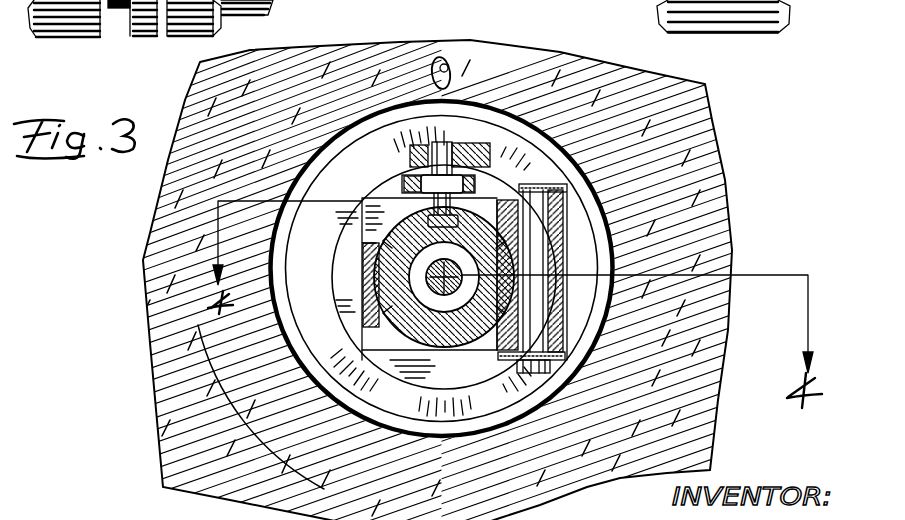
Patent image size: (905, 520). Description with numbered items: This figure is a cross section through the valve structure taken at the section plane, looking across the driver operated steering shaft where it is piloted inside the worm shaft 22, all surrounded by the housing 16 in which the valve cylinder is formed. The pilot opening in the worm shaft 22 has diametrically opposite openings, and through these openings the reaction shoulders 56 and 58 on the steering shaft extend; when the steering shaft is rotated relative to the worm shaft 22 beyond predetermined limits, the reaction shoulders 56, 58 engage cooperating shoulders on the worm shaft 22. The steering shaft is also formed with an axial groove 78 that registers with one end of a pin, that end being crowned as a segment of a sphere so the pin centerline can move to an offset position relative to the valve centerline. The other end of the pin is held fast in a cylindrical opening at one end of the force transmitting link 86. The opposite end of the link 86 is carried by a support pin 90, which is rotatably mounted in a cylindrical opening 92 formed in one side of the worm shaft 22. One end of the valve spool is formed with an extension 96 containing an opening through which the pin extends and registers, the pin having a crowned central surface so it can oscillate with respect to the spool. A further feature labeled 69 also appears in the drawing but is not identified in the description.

The housing 16 is at (722, 187).
The worm shaft 22 is at (340, 308).
The reaction shoulder 56 is at (360, 232).
The reaction shoulder 58 is at (360, 357).
The oil hole 69 is at (449, 60).
The axial groove 78 is at (345, 237).
The force transmitting link 86 is at (470, 147).
The support pin 90 is at (519, 370).
The cylindrical opening 92 is at (497, 350).
The extension 96 is at (393, 193).